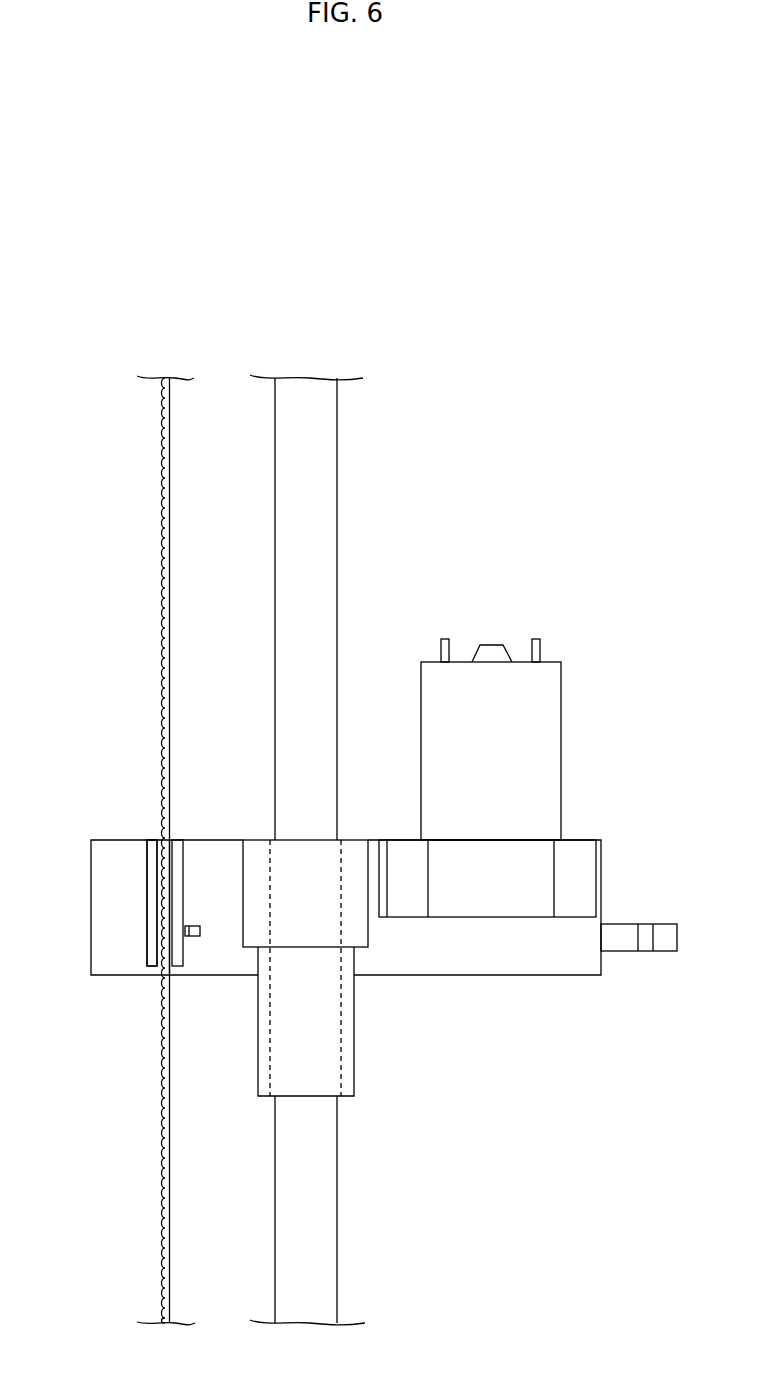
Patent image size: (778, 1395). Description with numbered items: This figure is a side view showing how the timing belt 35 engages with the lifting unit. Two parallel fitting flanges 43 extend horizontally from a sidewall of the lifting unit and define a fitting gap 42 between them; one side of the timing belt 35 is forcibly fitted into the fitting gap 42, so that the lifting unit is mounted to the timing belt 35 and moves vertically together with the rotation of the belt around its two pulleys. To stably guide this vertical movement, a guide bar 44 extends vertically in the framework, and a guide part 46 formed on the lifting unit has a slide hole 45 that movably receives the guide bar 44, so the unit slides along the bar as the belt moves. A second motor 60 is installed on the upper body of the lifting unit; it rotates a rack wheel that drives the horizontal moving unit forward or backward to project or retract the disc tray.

The timing belt 35 is at (162, 542).
The fitting gap 42 is at (158, 912).
The fitting flanges 43 is at (152, 870).
The guide bar 44 is at (327, 514).
The slide hole 45 is at (343, 1048).
The guide part 46 is at (343, 1007).
The second motor 60 is at (549, 738).